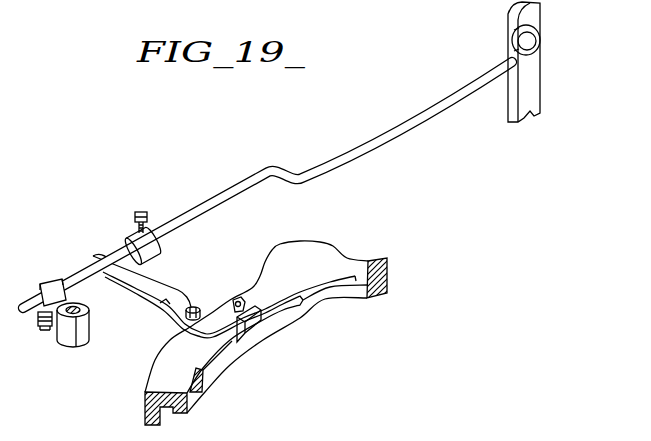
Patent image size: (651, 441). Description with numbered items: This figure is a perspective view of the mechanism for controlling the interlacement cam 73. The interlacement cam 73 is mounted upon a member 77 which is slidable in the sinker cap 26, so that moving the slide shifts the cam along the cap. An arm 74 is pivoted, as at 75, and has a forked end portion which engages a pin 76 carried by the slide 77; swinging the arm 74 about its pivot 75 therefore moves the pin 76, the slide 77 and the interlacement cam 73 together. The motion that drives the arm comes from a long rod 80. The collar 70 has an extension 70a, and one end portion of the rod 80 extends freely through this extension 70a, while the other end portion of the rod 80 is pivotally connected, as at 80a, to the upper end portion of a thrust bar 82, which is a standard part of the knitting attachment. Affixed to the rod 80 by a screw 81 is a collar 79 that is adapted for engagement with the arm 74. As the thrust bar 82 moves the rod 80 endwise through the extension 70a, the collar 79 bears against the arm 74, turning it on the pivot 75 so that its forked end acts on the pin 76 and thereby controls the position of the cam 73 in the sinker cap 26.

The sinker cap 26 is at (366, 261).
The collar 70 is at (90, 320).
The extension 70a is at (47, 282).
The interlacement cam 73 is at (258, 332).
The arm 74 is at (163, 306).
The pivot 75 is at (195, 306).
The pin 76 is at (238, 298).
The member 77 is at (262, 312).
The collar 79 is at (157, 248).
The rod 80 is at (306, 173).
The pivotal connection 80a is at (541, 40).
The screw 81 is at (148, 212).
The thrust bar 82 is at (522, 93).